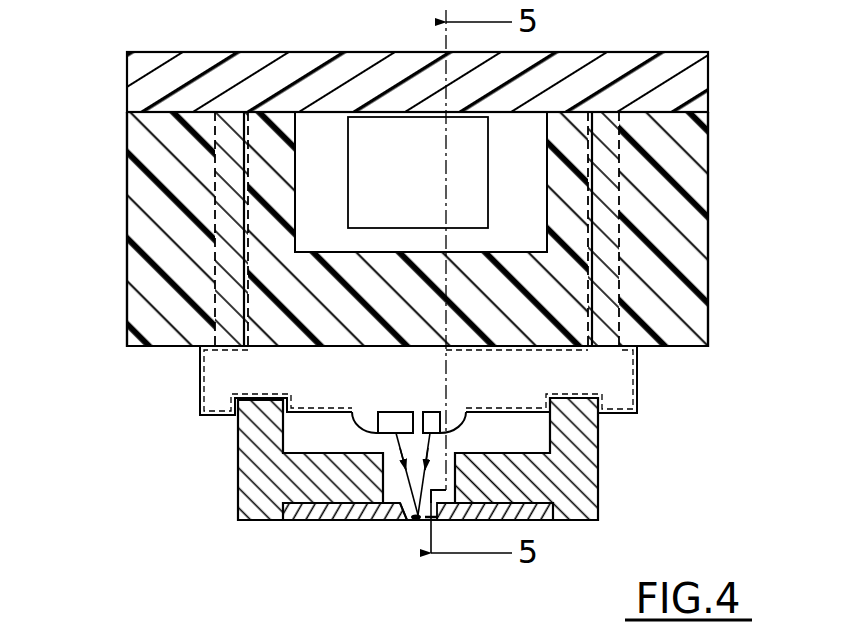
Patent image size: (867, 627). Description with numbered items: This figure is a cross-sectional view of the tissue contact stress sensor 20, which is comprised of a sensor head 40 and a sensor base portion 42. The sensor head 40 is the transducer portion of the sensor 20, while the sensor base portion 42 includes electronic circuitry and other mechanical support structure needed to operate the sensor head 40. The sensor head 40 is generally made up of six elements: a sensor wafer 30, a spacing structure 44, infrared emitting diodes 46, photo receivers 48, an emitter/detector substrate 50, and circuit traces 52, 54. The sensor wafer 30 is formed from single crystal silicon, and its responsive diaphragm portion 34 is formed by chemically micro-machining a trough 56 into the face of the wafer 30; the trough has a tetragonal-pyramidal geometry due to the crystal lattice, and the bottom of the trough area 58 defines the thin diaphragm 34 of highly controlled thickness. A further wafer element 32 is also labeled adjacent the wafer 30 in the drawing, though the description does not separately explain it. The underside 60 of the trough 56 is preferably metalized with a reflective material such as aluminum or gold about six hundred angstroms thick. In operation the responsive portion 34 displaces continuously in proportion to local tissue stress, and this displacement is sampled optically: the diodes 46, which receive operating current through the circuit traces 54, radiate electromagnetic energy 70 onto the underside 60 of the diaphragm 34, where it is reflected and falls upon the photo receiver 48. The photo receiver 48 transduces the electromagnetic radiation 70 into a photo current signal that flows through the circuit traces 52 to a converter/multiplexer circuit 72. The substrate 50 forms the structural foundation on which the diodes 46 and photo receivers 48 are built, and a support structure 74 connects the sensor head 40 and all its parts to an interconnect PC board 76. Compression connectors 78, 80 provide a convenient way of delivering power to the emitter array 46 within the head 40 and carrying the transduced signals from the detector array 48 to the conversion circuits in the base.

The tissue contact stress sensor 20 is at (744, 206).
The sensor wafer 30 is at (348, 535).
The orifice plate 32 is at (300, 529).
The responsive diaphragm portion 34 is at (398, 539).
The sensor head 40 is at (668, 418).
The sensor base portion 42 is at (90, 322).
The spacing structure 44 is at (250, 470).
The infrared emitting diodes 46 is at (433, 417).
The photo receivers 48 is at (380, 414).
The emitter/detector substrate 50 is at (403, 397).
The circuit traces 52 is at (212, 418).
The circuit traces 54 is at (618, 418).
The trough 56 is at (395, 522).
The bottom of the trough area 58 is at (417, 523).
The underside of trough 60 is at (403, 520).
The electromagnetic energy 70 is at (432, 454).
The converter/multiplexer circuit 72 is at (417, 185).
The support structure 74 is at (130, 268).
The interconnect PC board 76 is at (623, 56).
The compression connector 78 is at (214, 196).
The compression connector 80 is at (605, 189).